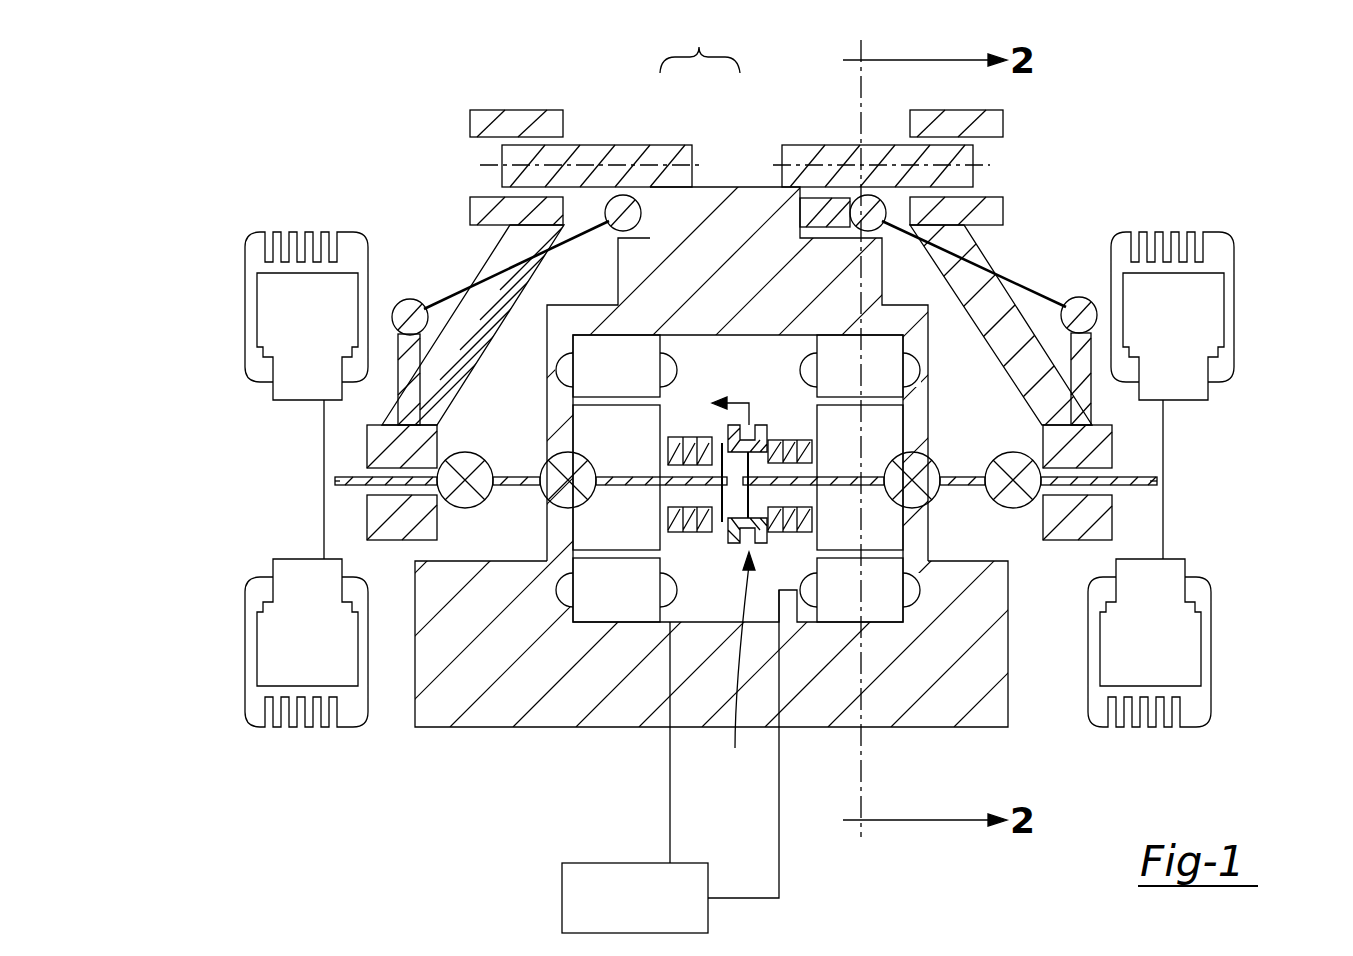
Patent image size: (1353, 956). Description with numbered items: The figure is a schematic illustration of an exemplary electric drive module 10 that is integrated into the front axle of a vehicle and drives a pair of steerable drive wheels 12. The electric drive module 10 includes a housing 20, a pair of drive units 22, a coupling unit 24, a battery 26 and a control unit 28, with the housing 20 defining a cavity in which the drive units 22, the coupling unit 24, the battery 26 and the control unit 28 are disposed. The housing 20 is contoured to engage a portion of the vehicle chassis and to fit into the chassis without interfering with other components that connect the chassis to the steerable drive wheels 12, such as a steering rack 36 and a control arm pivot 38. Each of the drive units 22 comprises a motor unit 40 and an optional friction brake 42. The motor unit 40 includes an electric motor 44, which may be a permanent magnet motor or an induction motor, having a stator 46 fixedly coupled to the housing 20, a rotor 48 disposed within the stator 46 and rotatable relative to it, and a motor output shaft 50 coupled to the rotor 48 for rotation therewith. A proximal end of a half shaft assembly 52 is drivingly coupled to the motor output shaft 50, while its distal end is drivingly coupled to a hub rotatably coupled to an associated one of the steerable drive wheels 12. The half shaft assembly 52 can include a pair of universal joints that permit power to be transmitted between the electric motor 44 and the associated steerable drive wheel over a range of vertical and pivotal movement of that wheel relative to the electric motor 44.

The electric drive module 10 is at (462, 736).
The steerable drive wheels 12 is at (245, 258).
The housing 20 is at (550, 318).
The drive units 22 is at (700, 45).
The coupling unit 24 is at (731, 665).
The battery 26 is at (918, 320).
The control unit 28 is at (562, 900).
The steering rack 36 is at (822, 206).
The control arm pivot 38 is at (973, 158).
The motor unit 40 is at (641, 352).
The friction brake 42 is at (674, 440).
The electric motor 44 is at (578, 520).
The stator 46 is at (592, 607).
The rotor 48 is at (610, 533).
The motor output shaft 50 is at (618, 477).
The half shaft assembly 52 is at (342, 486).